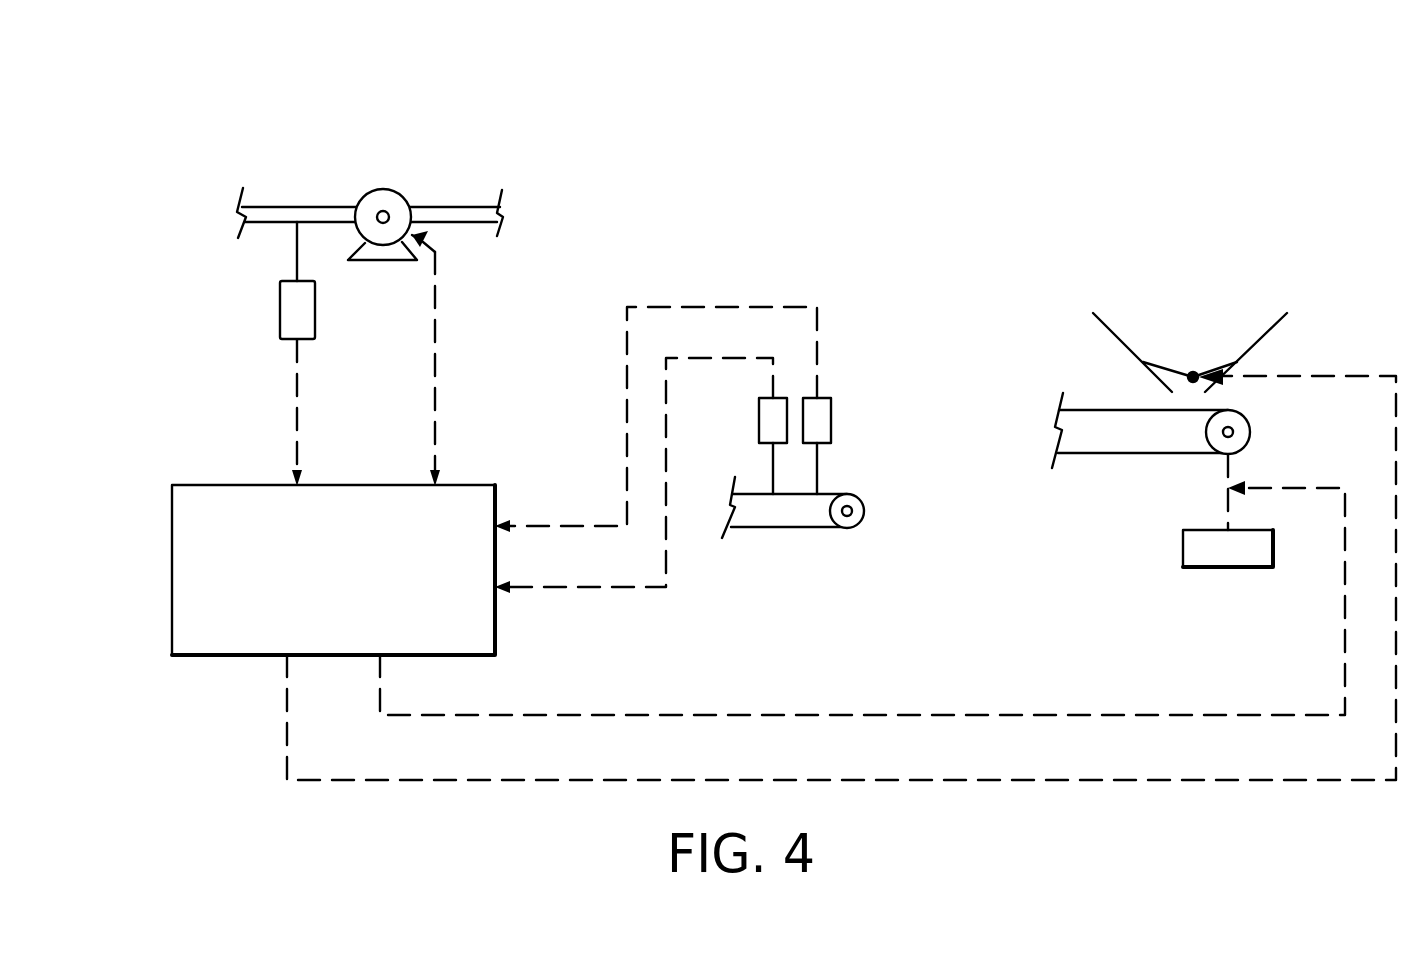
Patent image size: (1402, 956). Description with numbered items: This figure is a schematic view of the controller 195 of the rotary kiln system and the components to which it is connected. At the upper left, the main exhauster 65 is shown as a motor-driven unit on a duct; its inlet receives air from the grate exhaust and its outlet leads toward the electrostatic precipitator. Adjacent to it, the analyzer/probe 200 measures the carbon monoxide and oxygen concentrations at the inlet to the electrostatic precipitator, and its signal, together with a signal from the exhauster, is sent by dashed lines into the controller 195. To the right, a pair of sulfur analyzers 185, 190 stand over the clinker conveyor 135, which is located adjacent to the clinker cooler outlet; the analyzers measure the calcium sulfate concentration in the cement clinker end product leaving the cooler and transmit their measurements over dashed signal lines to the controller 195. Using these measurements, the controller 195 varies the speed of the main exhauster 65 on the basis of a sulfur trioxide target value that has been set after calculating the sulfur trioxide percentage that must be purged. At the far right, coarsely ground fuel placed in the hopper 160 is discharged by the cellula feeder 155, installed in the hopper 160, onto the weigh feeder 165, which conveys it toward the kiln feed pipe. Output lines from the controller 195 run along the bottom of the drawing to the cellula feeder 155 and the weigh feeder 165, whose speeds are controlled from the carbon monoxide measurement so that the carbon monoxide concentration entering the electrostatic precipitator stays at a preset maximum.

The main exhauster 65 is at (367, 189).
The analyzer/probe 200 is at (280, 312).
The controller 195 is at (172, 632).
The sulfur analyzer 185 is at (759, 420).
The sulfur analyzer 190 is at (831, 420).
The clinker conveyor 135 is at (780, 528).
The weigh feeder 165 is at (1090, 410).
The cellula feeder 155 is at (1192, 372).
The hopper 160 is at (1280, 325).